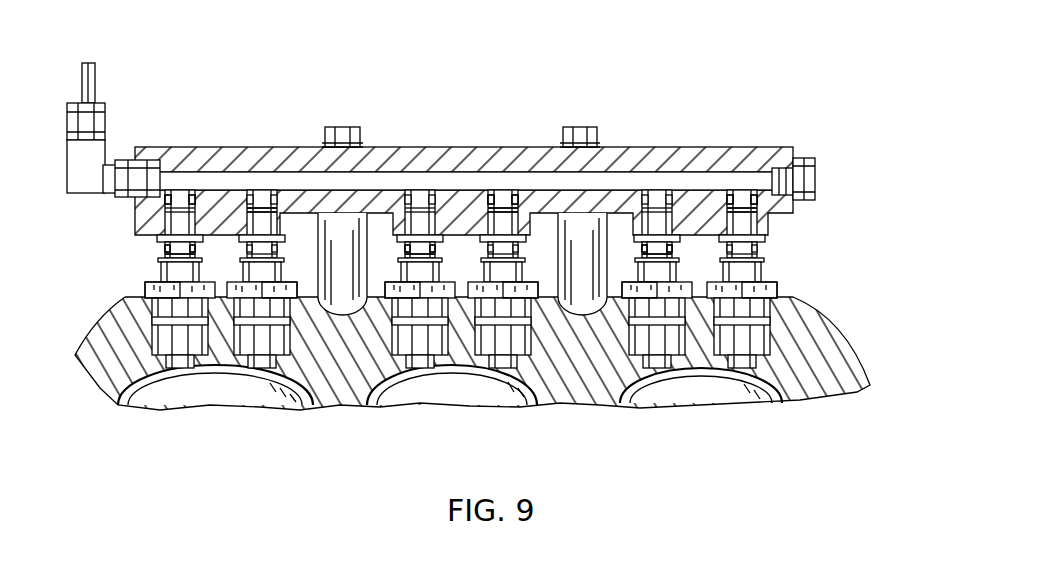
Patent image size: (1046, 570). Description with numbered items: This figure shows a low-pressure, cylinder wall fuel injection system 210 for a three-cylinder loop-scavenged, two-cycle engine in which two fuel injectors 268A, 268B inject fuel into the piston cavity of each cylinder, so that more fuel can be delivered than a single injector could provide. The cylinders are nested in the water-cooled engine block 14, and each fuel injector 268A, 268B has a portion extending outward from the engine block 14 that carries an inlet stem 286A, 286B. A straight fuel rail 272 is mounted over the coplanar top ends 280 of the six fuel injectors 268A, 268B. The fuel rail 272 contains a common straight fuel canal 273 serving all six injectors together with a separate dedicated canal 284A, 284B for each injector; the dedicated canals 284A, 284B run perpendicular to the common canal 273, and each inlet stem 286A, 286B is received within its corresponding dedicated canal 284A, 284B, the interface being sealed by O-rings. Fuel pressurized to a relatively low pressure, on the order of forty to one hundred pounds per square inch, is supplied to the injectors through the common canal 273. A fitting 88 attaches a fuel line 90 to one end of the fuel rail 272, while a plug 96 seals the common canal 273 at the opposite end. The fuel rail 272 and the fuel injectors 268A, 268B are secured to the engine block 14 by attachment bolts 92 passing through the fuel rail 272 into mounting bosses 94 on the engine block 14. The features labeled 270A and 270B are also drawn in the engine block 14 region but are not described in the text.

The engine block 14 is at (103, 380).
The fitting 88 is at (96, 184).
The fuel line 90 is at (93, 98).
The attachment bolts 92 is at (349, 125).
The mounting bosses 94 is at (350, 236).
The plug 96 is at (807, 180).
The cylinder wall fuel injection system 210 is at (462, 251).
The fuel rail 272 is at (670, 153).
The common straight fuel canal 273 is at (625, 182).
The top ends 280 is at (183, 190).
The dedicated canal 284A is at (165, 218).
The dedicated canal 284B is at (252, 190).
The inlet stem 286A is at (162, 248).
The inlet stem 286B is at (263, 190).
The fuel injector 268A is at (148, 293).
The fuel injector 268B is at (303, 300).
The combustion chamber wall portion 270A is at (125, 408).
The combustion chamber wall portion 270B is at (293, 408).